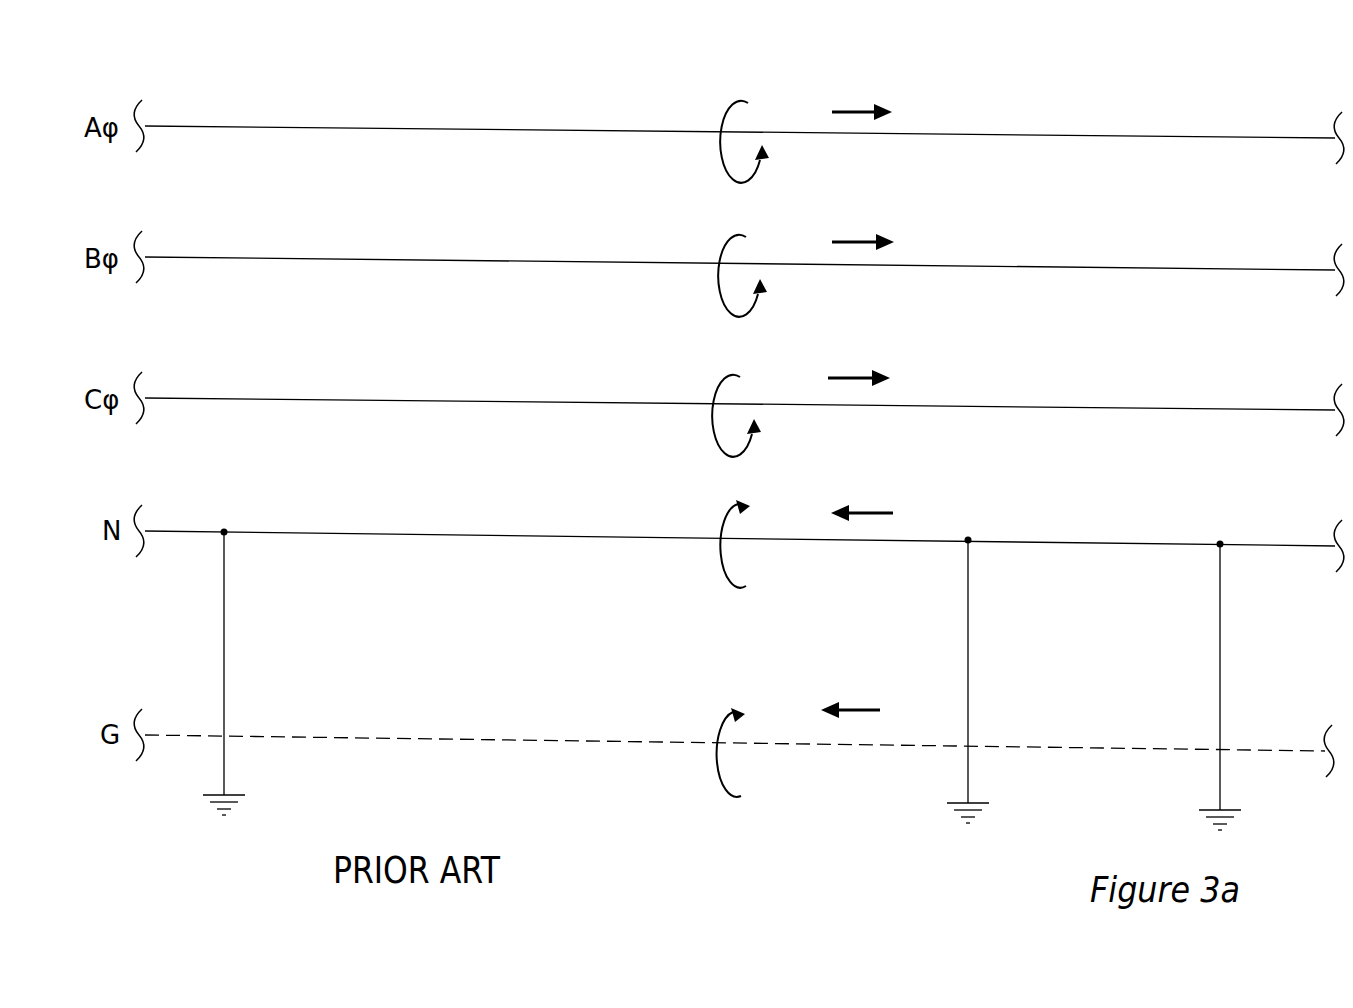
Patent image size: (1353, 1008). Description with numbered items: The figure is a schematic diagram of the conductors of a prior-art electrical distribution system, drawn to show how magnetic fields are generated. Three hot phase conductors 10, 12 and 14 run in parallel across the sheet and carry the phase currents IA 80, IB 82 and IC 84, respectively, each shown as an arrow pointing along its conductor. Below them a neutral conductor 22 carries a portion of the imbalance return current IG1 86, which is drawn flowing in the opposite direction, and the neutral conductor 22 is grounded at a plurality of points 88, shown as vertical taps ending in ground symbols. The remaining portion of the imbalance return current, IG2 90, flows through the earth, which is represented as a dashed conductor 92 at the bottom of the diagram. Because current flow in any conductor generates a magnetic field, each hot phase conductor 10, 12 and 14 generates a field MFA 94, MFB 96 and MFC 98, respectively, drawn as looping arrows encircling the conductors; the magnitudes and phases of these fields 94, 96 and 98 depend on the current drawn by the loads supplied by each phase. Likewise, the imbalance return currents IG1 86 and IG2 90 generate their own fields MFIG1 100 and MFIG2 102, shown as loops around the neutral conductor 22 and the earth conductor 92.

The hot phase conductor 10 is at (1035, 137).
The hot phase conductor 12 is at (1060, 268).
The hot phase conductor 14 is at (1080, 408).
The neutral conductor 22 is at (1065, 540).
The phase current IA 80 is at (850, 110).
The phase current IB 82 is at (855, 242).
The phase current IC 84 is at (850, 378).
The imbalance return current IG1 86 is at (862, 510).
The grounding points 88 is at (224, 737).
The imbalance return current IG2 90 is at (855, 710).
The earth conductor 92 is at (1125, 747).
The magnetic field MFA 94 is at (722, 122).
The magnetic field MFB 96 is at (718, 258).
The magnetic field MFC 98 is at (712, 398).
The magnetic field MFIG1 100 is at (745, 585).
The magnetic field MFIG2 102 is at (745, 783).